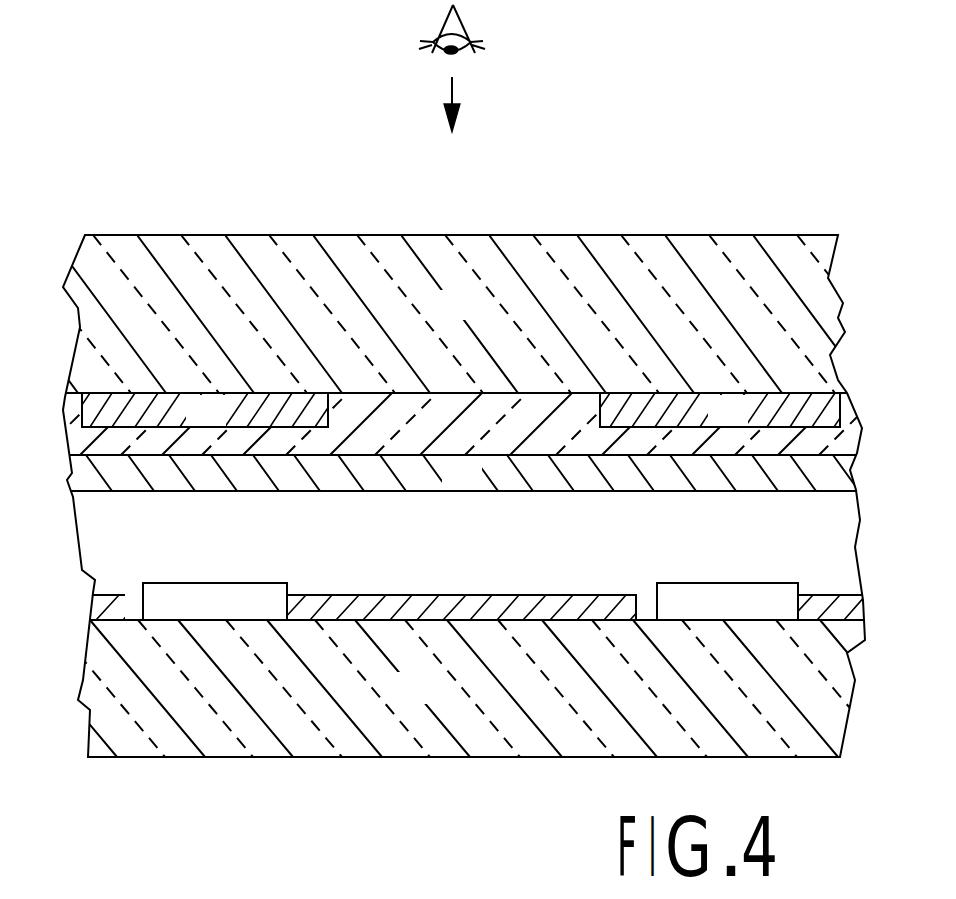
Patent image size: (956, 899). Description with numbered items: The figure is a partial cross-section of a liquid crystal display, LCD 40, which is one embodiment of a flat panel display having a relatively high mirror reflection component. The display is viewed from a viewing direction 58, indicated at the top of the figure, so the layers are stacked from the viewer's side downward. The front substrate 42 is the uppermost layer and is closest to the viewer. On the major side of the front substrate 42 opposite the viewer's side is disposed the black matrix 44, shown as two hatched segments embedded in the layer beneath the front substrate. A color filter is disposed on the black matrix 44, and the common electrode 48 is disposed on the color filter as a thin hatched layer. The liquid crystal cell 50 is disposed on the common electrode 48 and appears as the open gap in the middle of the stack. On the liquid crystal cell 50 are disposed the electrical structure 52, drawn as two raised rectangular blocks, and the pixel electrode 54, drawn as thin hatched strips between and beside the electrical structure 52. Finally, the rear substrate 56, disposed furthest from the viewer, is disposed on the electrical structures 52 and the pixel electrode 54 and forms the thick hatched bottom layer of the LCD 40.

The LCD 40 is at (478, 444).
The front substrate 42 is at (470, 320).
The black matrix 44 is at (220, 421).
The common electrode 48 is at (477, 481).
The liquid crystal cell 50 is at (481, 545).
The electrical structure 52 is at (227, 613).
The pixel electrode 54 is at (110, 596).
The rear substrate 56 is at (431, 702).
The viewing direction 58 is at (452, 89).